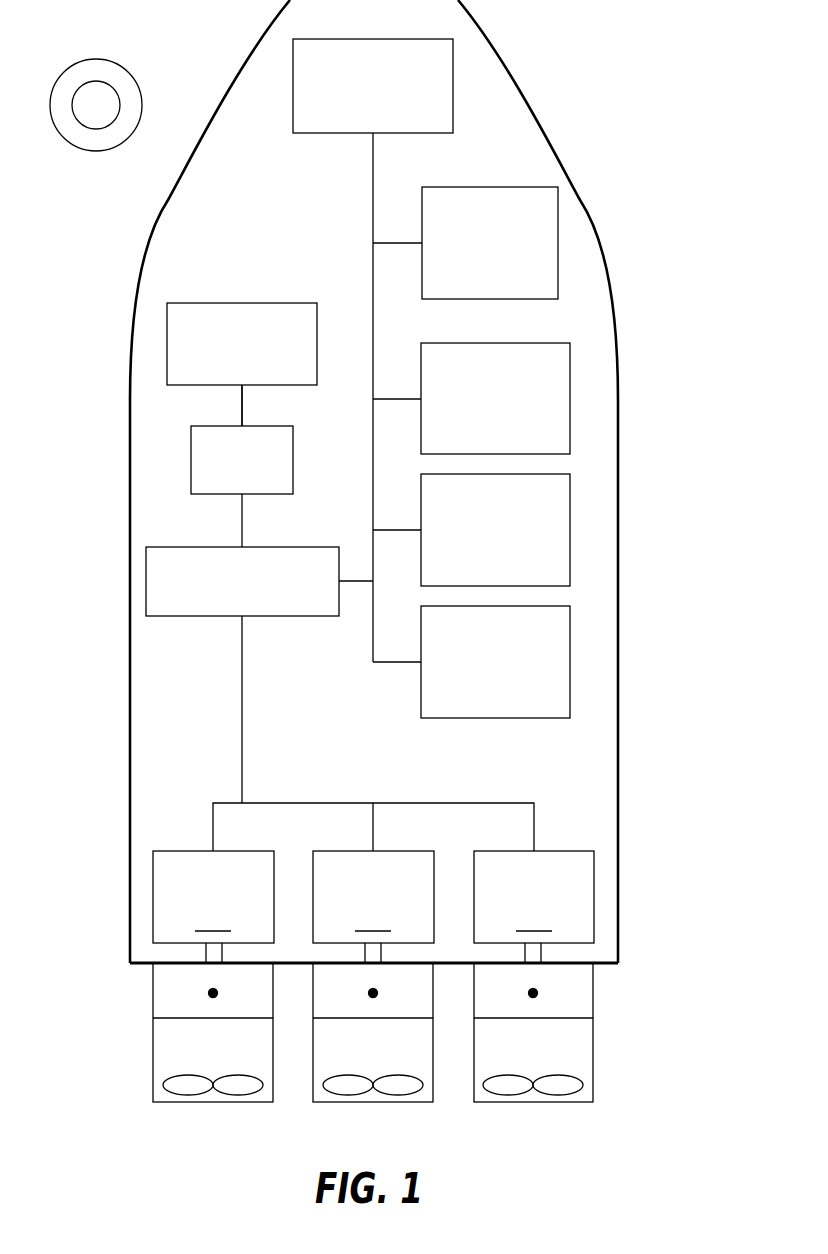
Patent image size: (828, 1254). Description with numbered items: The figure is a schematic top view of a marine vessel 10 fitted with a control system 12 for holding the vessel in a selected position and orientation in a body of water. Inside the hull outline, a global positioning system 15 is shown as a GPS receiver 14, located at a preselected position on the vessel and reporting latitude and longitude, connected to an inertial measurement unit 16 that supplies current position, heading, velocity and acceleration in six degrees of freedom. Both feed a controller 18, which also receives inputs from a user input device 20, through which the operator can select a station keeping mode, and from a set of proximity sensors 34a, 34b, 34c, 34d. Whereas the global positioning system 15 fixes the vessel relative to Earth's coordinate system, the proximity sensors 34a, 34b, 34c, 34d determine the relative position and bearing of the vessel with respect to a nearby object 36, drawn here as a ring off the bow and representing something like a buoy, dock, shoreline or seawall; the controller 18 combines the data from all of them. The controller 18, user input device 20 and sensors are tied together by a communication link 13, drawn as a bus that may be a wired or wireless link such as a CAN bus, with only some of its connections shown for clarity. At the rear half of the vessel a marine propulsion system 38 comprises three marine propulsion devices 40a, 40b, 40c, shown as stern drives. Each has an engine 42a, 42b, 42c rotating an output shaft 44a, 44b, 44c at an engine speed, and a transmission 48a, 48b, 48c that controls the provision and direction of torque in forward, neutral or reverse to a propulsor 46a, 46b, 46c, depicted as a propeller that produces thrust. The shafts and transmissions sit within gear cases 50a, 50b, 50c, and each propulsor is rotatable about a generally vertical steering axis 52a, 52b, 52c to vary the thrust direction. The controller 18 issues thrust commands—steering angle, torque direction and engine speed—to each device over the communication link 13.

The marine vessel 10 is at (562, 130).
The control system 12 is at (326, 706).
The communication link 13 is at (373, 195).
The GPS receiver 14 is at (243, 303).
The global positioning system 15 is at (162, 408).
The inertial measurement unit 16 is at (293, 455).
The controller 18 is at (205, 616).
The user input device 20 is at (558, 243).
The proximity sensor 34a is at (453, 105).
The proximity sensor 34b is at (571, 402).
The proximity sensor 34c is at (571, 533).
The proximity sensor 34d is at (571, 665).
The object 36 is at (125, 70).
The marine propulsion system 38 is at (570, 825).
The marine propulsion device 40a is at (185, 985).
The marine propulsion device 40b is at (379, 983).
The marine propulsion device 40c is at (584, 1002).
The engine 42a is at (213, 897).
The engine 42b is at (373, 897).
The engine 42c is at (534, 897).
The output shaft 44a is at (213, 955).
The output shaft 44b is at (390, 952).
The output shaft 44c is at (533, 953).
The propulsor 46a is at (192, 1087).
The propulsor 46b is at (398, 1087).
The propulsor 46c is at (556, 1087).
The transmission 48a is at (183, 1005).
The transmission 48b is at (408, 1002).
The transmission 48c is at (562, 1003).
The gear case 50a is at (180, 1063).
The gear case 50b is at (333, 1052).
The gear case 50c is at (567, 1063).
The steering axis 52a is at (208, 990).
The steering axis 52b is at (373, 998).
The steering axis 52c is at (538, 993).